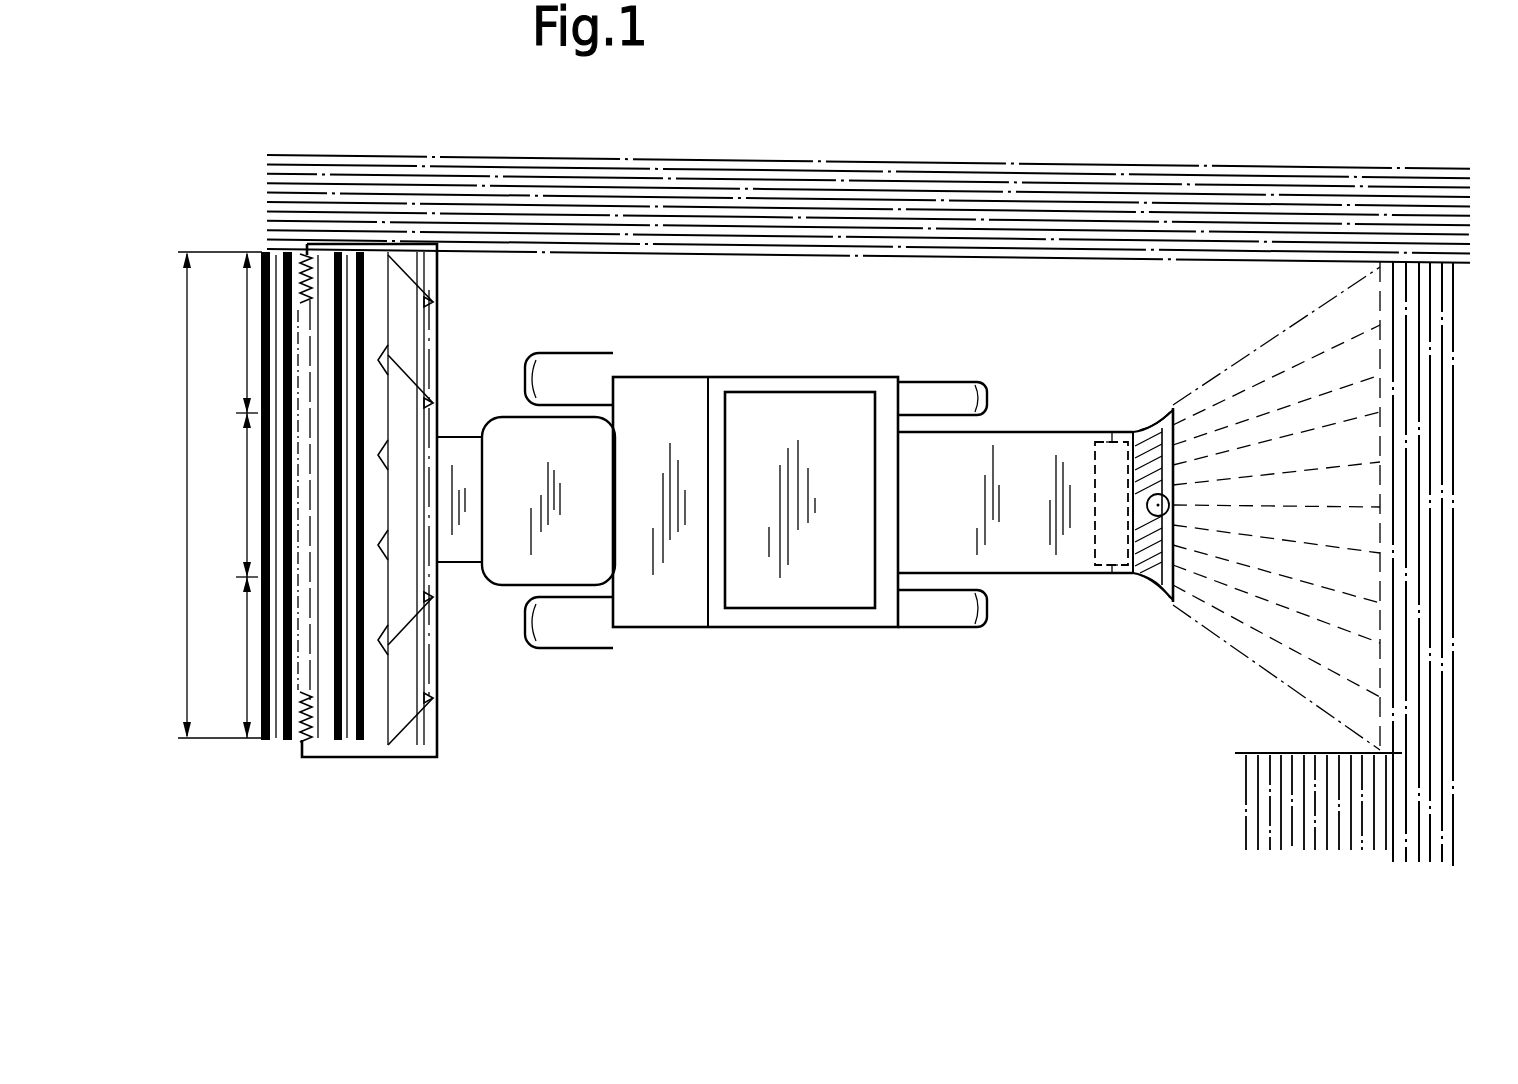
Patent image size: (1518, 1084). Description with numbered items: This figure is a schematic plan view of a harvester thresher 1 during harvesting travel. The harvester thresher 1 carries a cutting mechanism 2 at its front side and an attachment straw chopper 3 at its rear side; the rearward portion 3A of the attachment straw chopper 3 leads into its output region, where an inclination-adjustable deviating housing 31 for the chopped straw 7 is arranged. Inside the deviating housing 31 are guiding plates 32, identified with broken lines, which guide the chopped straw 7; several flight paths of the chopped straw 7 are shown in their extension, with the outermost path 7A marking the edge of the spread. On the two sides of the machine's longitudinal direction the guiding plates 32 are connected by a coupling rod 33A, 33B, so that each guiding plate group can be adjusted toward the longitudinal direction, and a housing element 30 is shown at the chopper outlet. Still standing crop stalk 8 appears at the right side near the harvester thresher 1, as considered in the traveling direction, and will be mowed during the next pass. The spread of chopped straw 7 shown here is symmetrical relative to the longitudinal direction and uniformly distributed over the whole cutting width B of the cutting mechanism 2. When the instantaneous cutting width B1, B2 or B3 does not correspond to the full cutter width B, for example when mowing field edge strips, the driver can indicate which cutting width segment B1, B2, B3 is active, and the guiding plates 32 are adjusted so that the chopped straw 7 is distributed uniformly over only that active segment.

The harvester thresher 1 is at (702, 657).
The cutting mechanism 2 is at (293, 775).
The attachment straw chopper 3 is at (1025, 594).
The boom end section 3A is at (1027, 452).
The chopped straw 7 is at (1243, 368).
The wall edge 7A is at (1253, 625).
The still standing crop stalk 8 is at (789, 228).
The sensor housing 30 is at (1100, 574).
The deviating housing 31 is at (1146, 396).
The guiding plates 32 is at (1173, 408).
The coupling rod 33A is at (1159, 592).
The coupling rod 33B is at (1158, 445).
The cutting width B is at (210, 495).
The cutting width segment B1 is at (234, 332).
The cutting width segment B2 is at (232, 495).
The cutting width segment B3 is at (227, 657).